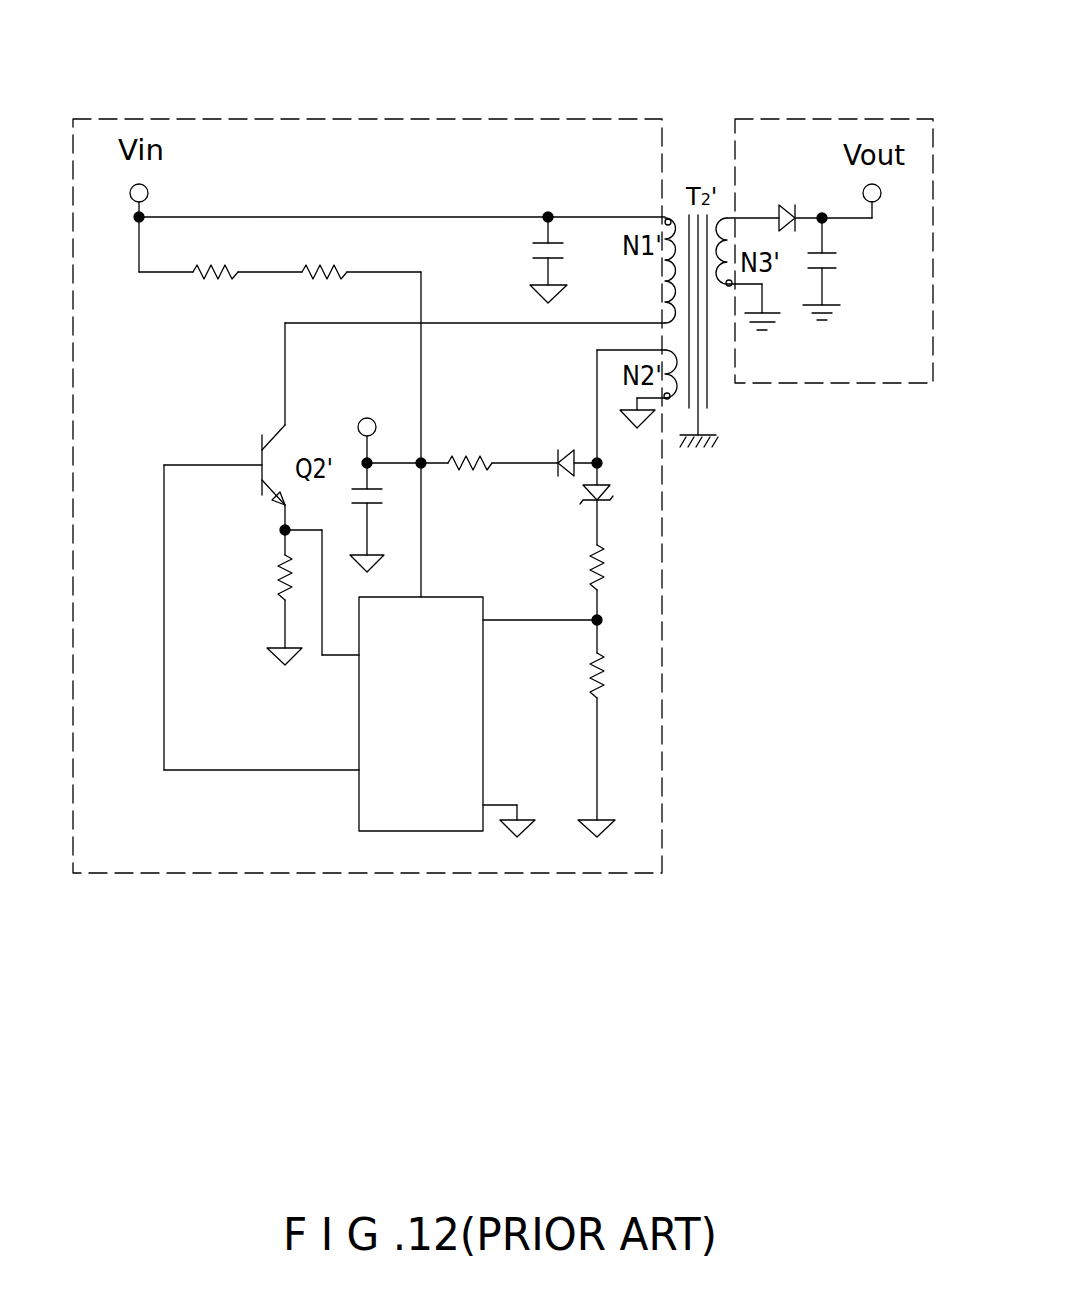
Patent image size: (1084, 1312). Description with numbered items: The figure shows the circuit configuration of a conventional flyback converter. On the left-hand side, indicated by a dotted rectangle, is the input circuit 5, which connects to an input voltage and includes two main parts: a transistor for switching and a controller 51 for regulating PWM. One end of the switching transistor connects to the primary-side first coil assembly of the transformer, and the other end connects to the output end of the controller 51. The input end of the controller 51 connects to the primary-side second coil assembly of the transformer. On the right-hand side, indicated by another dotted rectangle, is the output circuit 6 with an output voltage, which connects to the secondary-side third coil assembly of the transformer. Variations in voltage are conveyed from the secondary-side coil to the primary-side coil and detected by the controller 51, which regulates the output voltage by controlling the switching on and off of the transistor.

The input circuit 5 is at (367, 118).
The output circuit 6 is at (834, 119).
The controller 51 is at (422, 831).